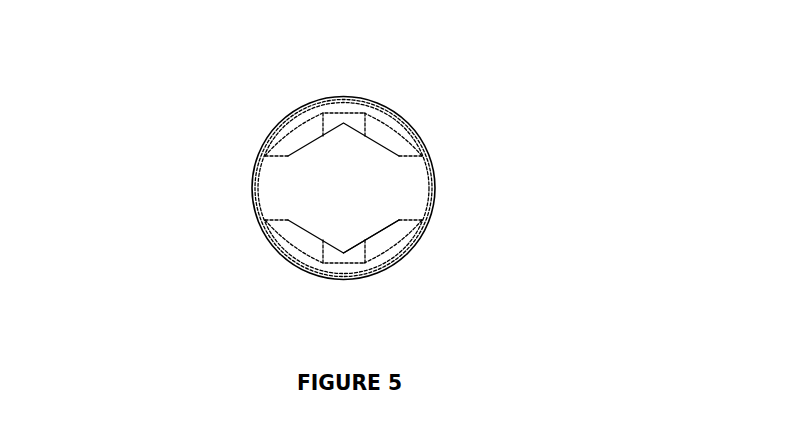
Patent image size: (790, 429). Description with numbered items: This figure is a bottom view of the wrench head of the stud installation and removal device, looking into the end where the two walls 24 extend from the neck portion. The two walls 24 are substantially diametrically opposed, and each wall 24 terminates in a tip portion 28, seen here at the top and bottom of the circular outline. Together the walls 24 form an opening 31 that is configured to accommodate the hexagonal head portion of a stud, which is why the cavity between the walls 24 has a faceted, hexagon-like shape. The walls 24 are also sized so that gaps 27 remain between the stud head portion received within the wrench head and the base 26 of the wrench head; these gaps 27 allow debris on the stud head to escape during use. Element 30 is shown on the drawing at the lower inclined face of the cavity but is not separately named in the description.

The wall 24 is at (305, 106).
The base 26 is at (357, 178).
The gap 27 is at (427, 202).
The tip portion 28 is at (350, 123).
The lower inclined face 30 is at (368, 242).
The opening 31 is at (315, 168).